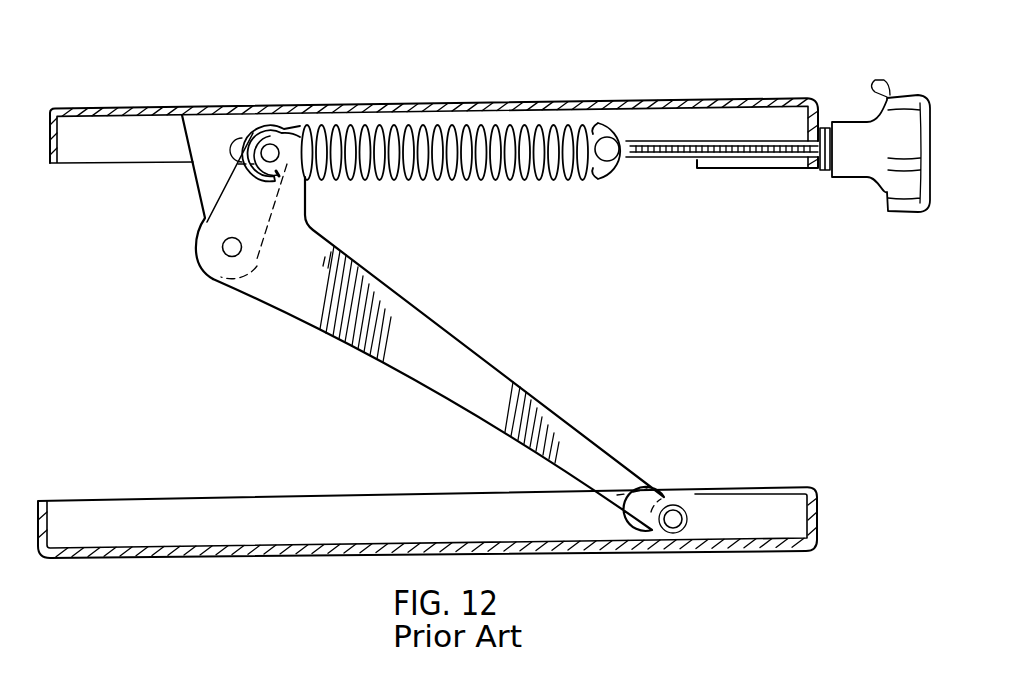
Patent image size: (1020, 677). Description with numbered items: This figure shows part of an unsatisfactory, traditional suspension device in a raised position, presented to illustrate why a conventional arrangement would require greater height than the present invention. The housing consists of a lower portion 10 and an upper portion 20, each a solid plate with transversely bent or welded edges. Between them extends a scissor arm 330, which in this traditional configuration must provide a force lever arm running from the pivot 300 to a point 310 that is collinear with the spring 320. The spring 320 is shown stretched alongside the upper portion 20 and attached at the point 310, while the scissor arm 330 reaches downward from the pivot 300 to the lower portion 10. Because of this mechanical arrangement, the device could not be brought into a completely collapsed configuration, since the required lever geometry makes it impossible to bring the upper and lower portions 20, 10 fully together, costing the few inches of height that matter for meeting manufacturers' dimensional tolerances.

The lower portion 10 is at (638, 552).
The upper portion 20 is at (750, 97).
The pivot 300 is at (231, 249).
The point collinear with spring 310 is at (267, 152).
The spring 320 is at (469, 127).
The scissor arm 330 is at (470, 347).